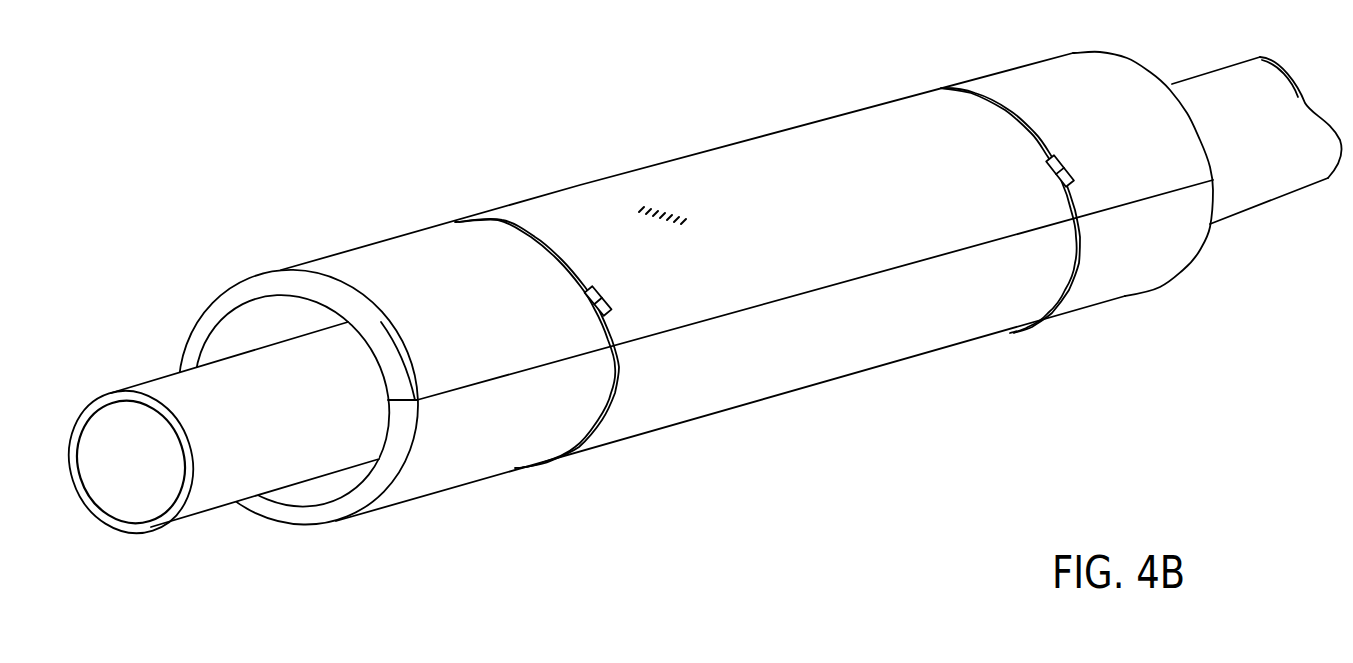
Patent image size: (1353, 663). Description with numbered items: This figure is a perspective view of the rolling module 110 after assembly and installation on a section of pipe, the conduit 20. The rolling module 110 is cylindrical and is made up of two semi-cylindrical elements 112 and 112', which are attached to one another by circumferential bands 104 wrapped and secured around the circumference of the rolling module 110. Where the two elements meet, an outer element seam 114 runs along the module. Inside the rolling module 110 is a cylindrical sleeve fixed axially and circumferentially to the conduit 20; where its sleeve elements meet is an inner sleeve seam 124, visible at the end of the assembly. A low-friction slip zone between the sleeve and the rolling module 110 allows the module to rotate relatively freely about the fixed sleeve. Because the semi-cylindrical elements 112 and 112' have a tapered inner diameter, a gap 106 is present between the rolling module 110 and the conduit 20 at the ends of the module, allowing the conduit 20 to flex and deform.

The conduit 20 is at (156, 390).
The circumferential band 104 is at (492, 220).
The gap 106 is at (362, 476).
The rolling module 110 is at (654, 150).
The semi-cylindrical element 112 is at (730, 408).
The semi-cylindrical element 112' is at (677, 161).
The outer element seam 114 is at (752, 308).
The inner sleeve seam 124 is at (400, 398).